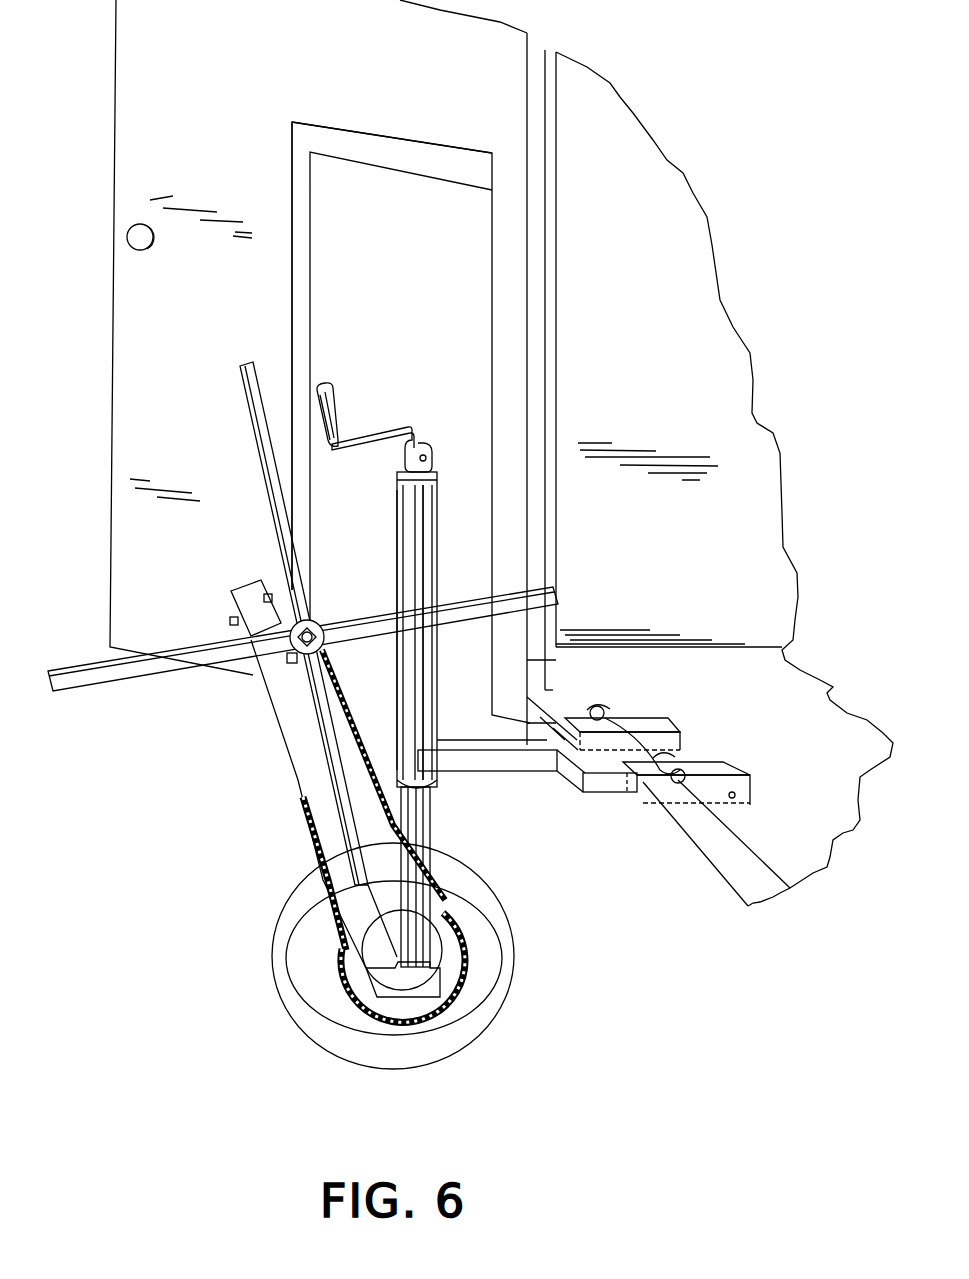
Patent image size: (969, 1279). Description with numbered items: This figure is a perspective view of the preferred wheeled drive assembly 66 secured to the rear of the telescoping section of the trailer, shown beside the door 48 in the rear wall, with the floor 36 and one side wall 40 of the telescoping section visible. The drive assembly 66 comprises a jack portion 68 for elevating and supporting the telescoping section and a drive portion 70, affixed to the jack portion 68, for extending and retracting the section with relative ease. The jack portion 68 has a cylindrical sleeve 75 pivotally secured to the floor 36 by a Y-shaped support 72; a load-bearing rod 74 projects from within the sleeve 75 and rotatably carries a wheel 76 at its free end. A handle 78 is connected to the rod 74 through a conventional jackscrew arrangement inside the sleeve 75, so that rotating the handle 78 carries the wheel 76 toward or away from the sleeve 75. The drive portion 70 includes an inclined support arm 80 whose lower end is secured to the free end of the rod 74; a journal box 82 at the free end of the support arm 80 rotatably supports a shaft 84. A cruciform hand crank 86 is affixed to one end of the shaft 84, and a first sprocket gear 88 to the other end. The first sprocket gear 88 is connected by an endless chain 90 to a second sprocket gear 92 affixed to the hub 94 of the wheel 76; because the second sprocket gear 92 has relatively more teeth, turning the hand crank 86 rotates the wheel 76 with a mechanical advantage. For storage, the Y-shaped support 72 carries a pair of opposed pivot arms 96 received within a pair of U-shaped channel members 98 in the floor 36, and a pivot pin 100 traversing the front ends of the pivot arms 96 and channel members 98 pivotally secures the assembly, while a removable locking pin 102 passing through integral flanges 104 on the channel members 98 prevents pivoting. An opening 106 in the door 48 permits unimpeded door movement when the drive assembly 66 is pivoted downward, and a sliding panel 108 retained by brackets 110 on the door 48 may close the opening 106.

The floor 36 is at (786, 719).
The side wall 40 is at (638, 401).
The door 48 is at (247, 55).
The wheeled drive assembly 66 is at (447, 465).
The jack portion 68 is at (388, 538).
The drive portion 70 is at (272, 750).
The Y-shaped support 72 is at (463, 755).
The load-bearing rod 74 is at (430, 823).
The cylindrical sleeve 75 is at (425, 572).
The wheel 76 is at (478, 882).
The handle 78 is at (410, 425).
The inclined support arm 80 is at (302, 792).
The journal box 82 is at (273, 600).
The shaft 84 is at (315, 628).
The hand crank 86 is at (185, 650).
The first sprocket gear 88 is at (293, 655).
The endless chain 90 is at (302, 857).
The second sprocket gear 92 is at (452, 903).
The hub 94 is at (342, 990).
The pivot arms 96 is at (572, 788).
The U-shaped channel members 98 is at (627, 722).
The pivot pin 100 is at (742, 795).
The removable locking pin 102 is at (599, 706).
The integral flanges 104 is at (676, 766).
The opening 106 is at (348, 212).
The sliding panel 108 is at (393, 140).
The brackets 110 is at (314, 297).